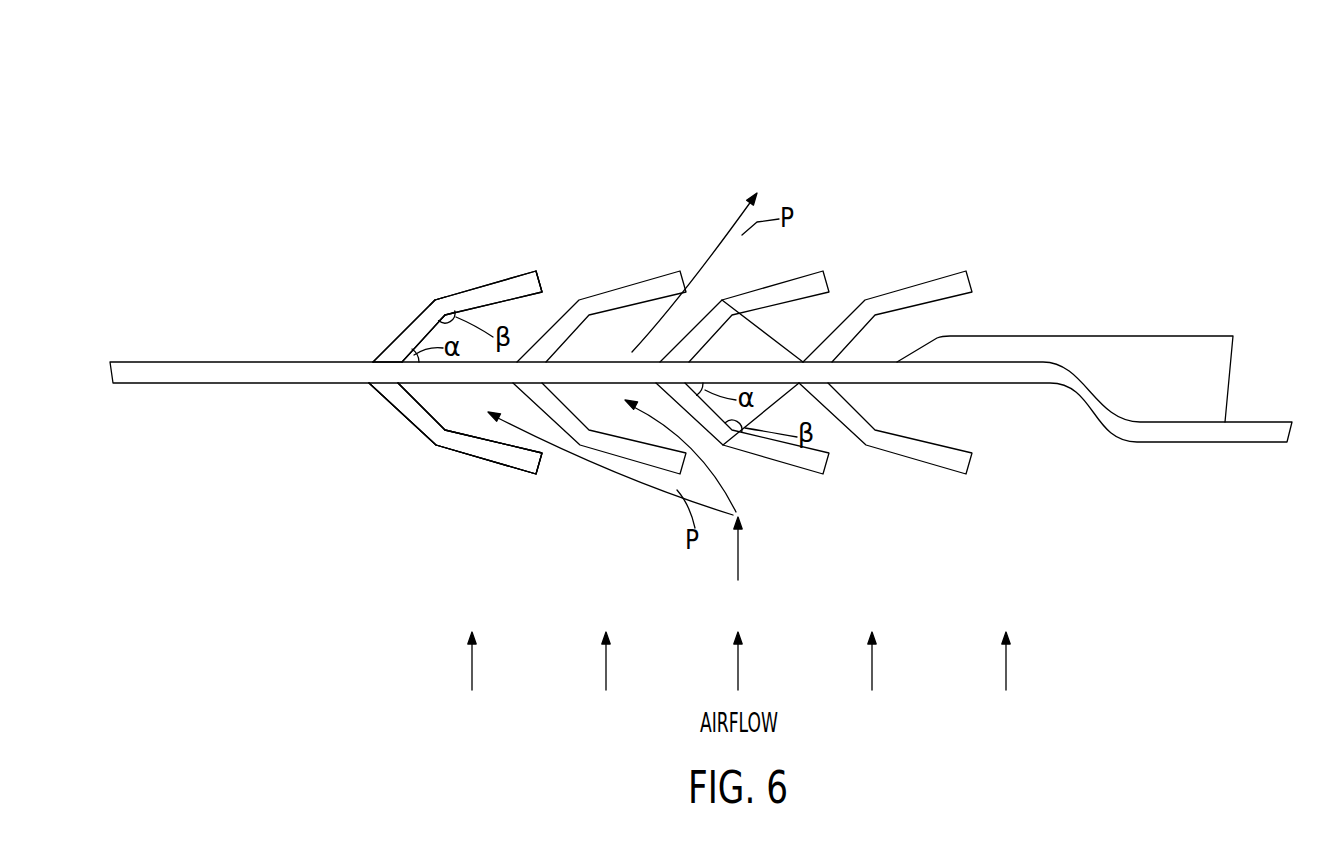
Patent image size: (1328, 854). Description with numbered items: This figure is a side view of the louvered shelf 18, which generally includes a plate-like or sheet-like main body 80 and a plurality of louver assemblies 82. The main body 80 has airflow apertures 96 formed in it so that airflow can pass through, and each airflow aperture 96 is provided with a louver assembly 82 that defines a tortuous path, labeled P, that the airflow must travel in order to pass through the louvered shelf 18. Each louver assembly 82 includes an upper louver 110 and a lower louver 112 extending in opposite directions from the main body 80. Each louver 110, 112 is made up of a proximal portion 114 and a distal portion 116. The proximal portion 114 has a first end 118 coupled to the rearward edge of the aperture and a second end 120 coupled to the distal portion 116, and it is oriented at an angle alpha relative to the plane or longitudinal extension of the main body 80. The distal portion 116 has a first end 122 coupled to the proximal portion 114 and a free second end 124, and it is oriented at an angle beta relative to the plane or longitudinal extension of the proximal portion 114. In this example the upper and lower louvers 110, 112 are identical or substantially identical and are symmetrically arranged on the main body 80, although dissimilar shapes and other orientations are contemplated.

The louvered shelf 18 is at (1100, 139).
The main body 80 is at (143, 362).
The louver assembly 82 is at (416, 455).
The airflow aperture 96 is at (805, 324).
The upper louver 110 is at (430, 272).
The lower louver 112 is at (450, 485).
The proximal portion 114 is at (393, 351).
The distal portion 116 is at (498, 287).
The first end 118 is at (372, 362).
The second end 120 is at (435, 299).
The first end 122 is at (442, 293).
The free second end 124 is at (533, 270).